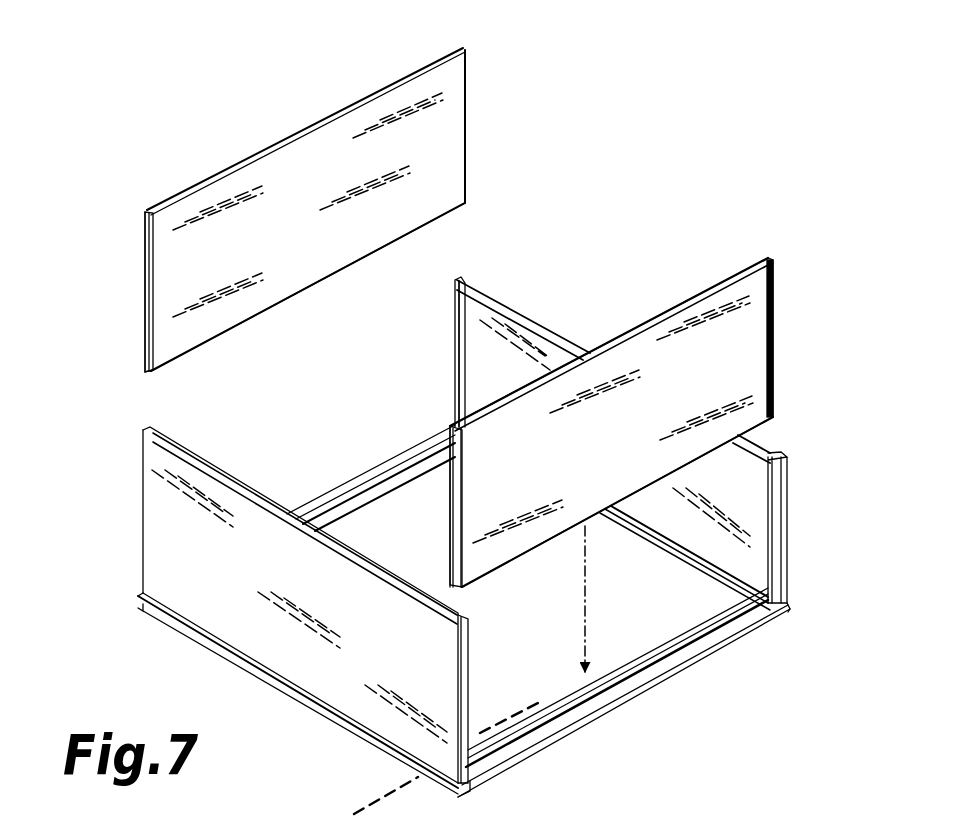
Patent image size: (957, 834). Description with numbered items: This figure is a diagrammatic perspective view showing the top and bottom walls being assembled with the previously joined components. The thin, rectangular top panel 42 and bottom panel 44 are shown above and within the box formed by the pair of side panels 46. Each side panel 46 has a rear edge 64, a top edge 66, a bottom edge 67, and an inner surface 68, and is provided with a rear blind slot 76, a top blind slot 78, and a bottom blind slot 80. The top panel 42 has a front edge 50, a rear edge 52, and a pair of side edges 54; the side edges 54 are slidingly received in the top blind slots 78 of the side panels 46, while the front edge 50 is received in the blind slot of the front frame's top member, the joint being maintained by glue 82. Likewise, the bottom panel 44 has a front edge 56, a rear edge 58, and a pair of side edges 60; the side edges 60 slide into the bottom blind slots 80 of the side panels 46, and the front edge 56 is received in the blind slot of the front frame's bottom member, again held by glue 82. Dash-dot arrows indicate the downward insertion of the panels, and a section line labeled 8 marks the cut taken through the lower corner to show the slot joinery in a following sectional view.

The section line 8- 8 is at (533, 702).
The top panel 42 is at (306, 116).
The bottom panel 44 is at (674, 371).
The side panels 46 is at (186, 567).
The front edge 50 is at (263, 307).
The rear edge 52 is at (378, 108).
The side edges 54 is at (466, 150).
The front edge 56 is at (588, 518).
The rear edge 58 is at (750, 268).
The side edges 60 is at (776, 345).
The rear edges 64 is at (235, 482).
The top edges 66 is at (148, 489).
The bottom edges 67 is at (787, 552).
The inner surfaces 68 is at (790, 466).
The rear blind slot 76 is at (466, 290).
The top blind slot 78 is at (465, 338).
The bottom blind slot 80 is at (789, 601).
The glue 82 is at (472, 337).